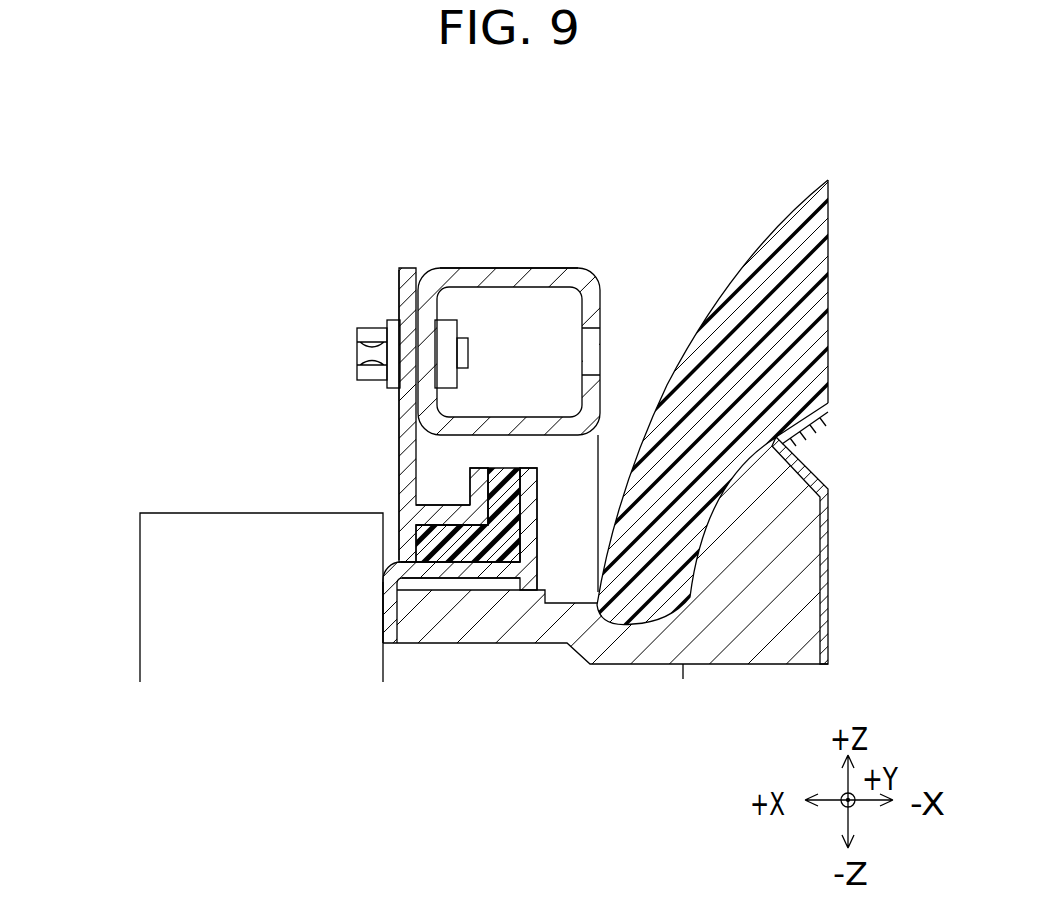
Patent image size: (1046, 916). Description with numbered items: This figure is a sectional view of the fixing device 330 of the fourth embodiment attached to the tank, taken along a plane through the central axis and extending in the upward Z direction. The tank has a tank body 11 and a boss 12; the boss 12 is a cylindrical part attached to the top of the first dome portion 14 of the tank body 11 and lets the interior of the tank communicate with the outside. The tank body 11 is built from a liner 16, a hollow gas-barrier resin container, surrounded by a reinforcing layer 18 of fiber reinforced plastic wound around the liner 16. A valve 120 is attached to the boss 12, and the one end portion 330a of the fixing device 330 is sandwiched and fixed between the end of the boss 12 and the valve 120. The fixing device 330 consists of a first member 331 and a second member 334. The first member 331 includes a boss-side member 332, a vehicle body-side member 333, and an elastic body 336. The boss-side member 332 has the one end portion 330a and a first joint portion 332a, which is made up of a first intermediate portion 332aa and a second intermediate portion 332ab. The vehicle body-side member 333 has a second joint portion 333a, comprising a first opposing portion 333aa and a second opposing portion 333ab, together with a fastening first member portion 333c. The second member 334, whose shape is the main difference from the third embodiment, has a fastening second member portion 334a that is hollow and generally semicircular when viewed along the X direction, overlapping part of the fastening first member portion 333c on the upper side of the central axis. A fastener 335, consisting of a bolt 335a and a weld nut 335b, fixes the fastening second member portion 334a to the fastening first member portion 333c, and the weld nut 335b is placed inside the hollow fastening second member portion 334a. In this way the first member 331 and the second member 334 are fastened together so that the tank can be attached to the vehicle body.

The tank body 11 is at (740, 208).
The boss 12 is at (810, 575).
The first dome portion 14 is at (712, 406).
The liner 16 is at (800, 458).
The reinforcing layer 18 is at (829, 305).
The valve 120 is at (163, 551).
The fixing device 330 is at (258, 183).
The one end portion 330a is at (396, 605).
The first member 331 is at (128, 350).
The boss-side member 332 is at (448, 577).
The first joint portion 332a is at (620, 707).
The first intermediate portion 332aa is at (470, 573).
The second intermediate portion 332ab is at (532, 518).
The vehicle body-side member 333 is at (203, 390).
The second joint portion 333a is at (237, 393).
The first opposing portion 333aa is at (452, 510).
The second opposing portion 333ab is at (480, 490).
The fastening first member portion 333c is at (407, 400).
The second member 334 is at (577, 277).
The fastening second member portion 334a is at (507, 275).
The fastener 335 is at (257, 243).
The bolt 335a is at (377, 337).
The weld nut 335b is at (447, 330).
The elastic body 336 is at (500, 470).